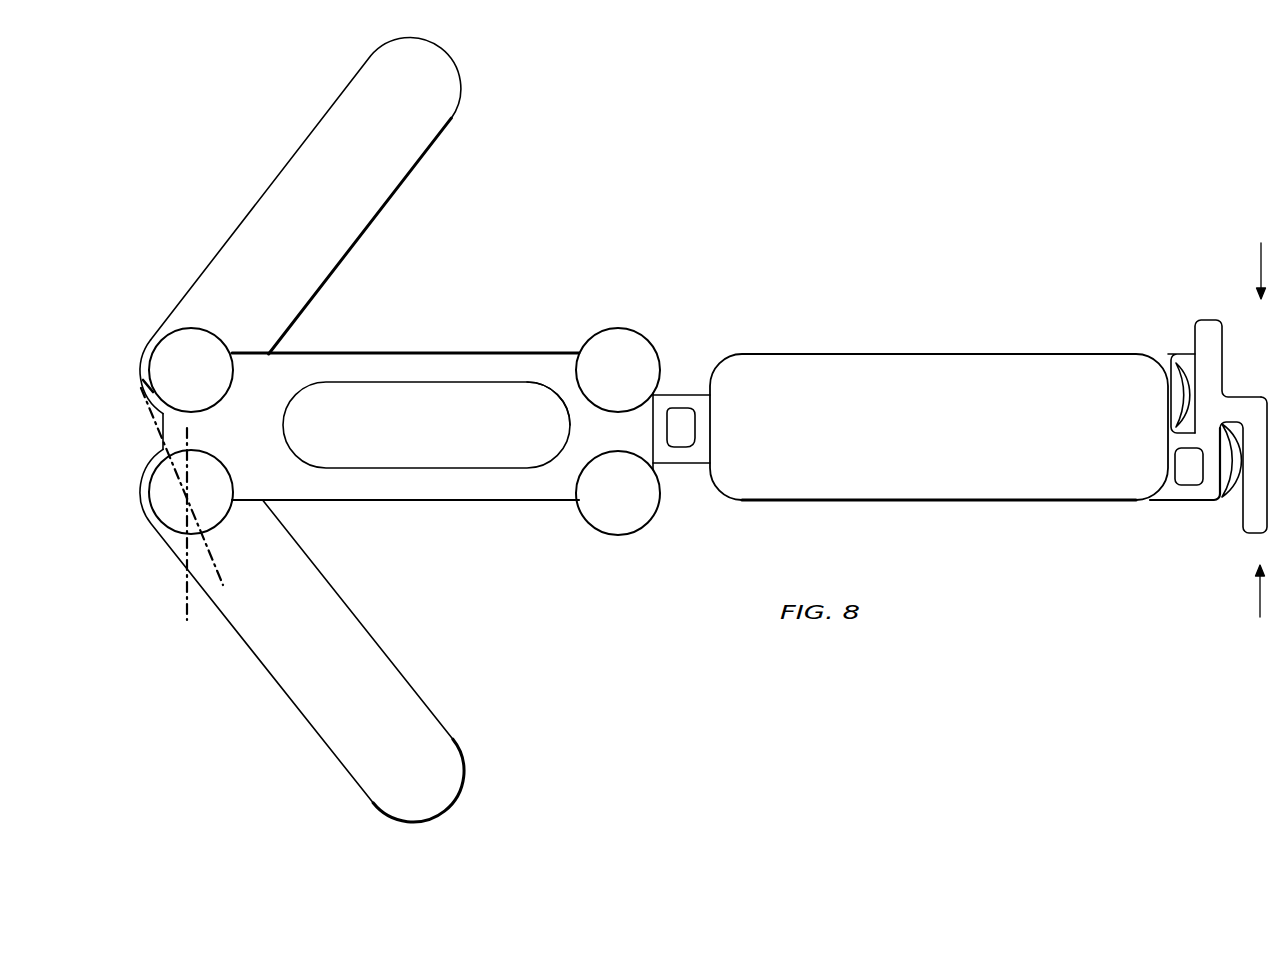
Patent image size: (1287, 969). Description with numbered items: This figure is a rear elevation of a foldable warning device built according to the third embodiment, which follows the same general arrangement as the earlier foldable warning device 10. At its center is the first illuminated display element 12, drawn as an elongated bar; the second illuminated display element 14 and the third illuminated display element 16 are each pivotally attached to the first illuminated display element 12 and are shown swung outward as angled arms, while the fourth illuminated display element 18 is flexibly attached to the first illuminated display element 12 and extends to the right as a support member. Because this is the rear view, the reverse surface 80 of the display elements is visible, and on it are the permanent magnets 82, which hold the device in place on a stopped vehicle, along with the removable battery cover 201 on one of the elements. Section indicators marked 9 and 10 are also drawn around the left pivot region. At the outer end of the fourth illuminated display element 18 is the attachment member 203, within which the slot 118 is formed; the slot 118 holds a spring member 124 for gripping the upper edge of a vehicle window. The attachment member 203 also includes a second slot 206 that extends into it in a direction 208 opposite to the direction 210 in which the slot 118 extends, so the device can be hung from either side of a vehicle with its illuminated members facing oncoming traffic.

The section line 9- 9 is at (185, 428).
The foldable warning device 10 is at (143, 385).
The first illuminated display element 12 is at (401, 409).
The second illuminated display element 14 is at (368, 612).
The third illuminated display element 16 is at (376, 221).
The fourth illuminated display element 18 is at (939, 392).
The reverse surface 80 is at (430, 370).
The permanent magnets 82 is at (592, 336).
The slot 118 is at (1190, 356).
The spring member 124 is at (1192, 397).
The removable battery cover 201 is at (493, 380).
The attachment member 203 is at (1160, 508).
The second slot 206 is at (1236, 505).
The direction 208 is at (1260, 597).
The direction 210 is at (1261, 262).